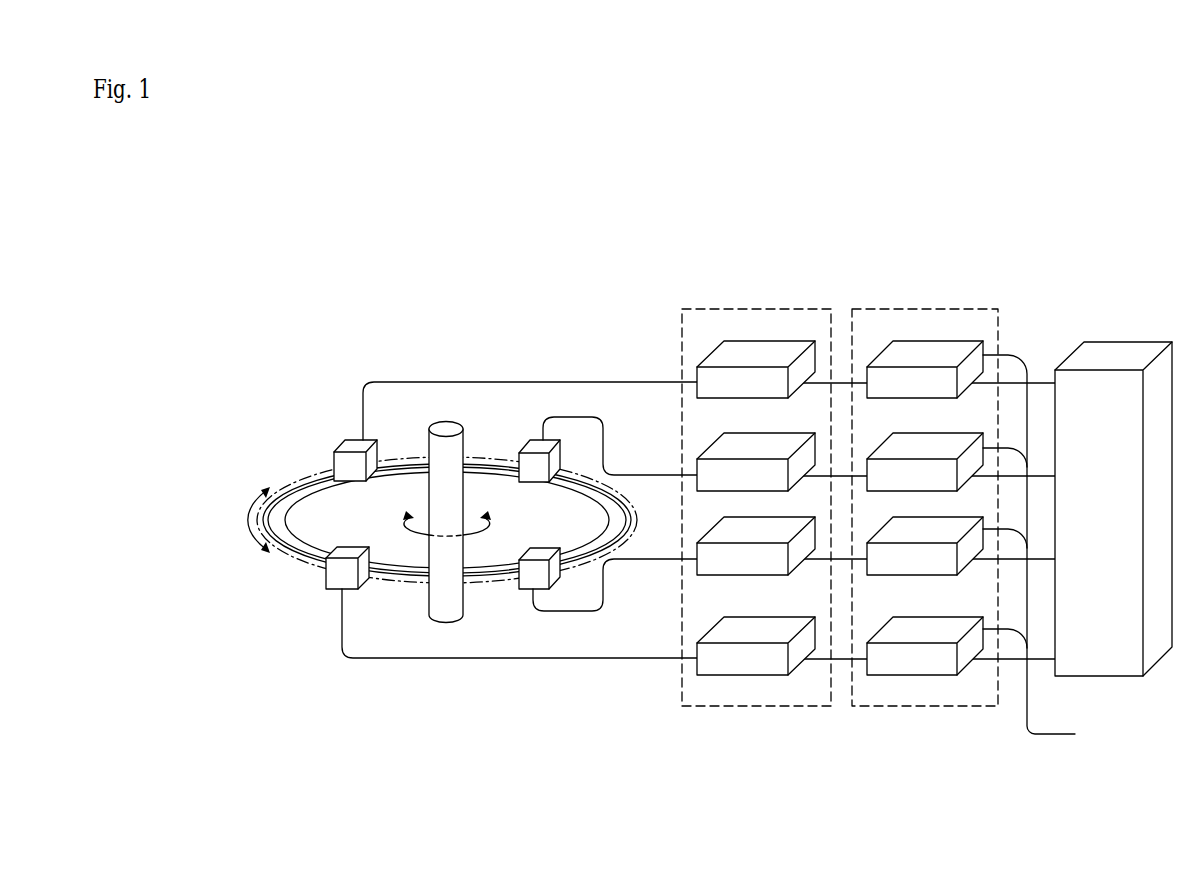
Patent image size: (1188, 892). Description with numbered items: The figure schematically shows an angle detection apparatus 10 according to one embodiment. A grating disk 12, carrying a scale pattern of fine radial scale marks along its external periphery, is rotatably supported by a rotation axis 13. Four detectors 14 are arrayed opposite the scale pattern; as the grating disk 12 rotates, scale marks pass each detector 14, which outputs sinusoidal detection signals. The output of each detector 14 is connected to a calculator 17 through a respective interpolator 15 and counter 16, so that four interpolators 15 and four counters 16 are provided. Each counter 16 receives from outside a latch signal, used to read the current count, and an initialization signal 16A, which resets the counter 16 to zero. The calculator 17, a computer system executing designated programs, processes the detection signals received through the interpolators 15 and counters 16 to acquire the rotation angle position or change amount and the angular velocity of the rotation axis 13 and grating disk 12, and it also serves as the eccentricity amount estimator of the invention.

The angle detection apparatus 10 is at (279, 365).
The grating disk 12 is at (279, 556).
The rotation axis 13 is at (447, 624).
The detector 14 is at (338, 444).
The interpolator 15 is at (772, 340).
The counter 16 is at (947, 340).
The initialization signal 16A is at (1051, 736).
The calculator 17 is at (1127, 342).